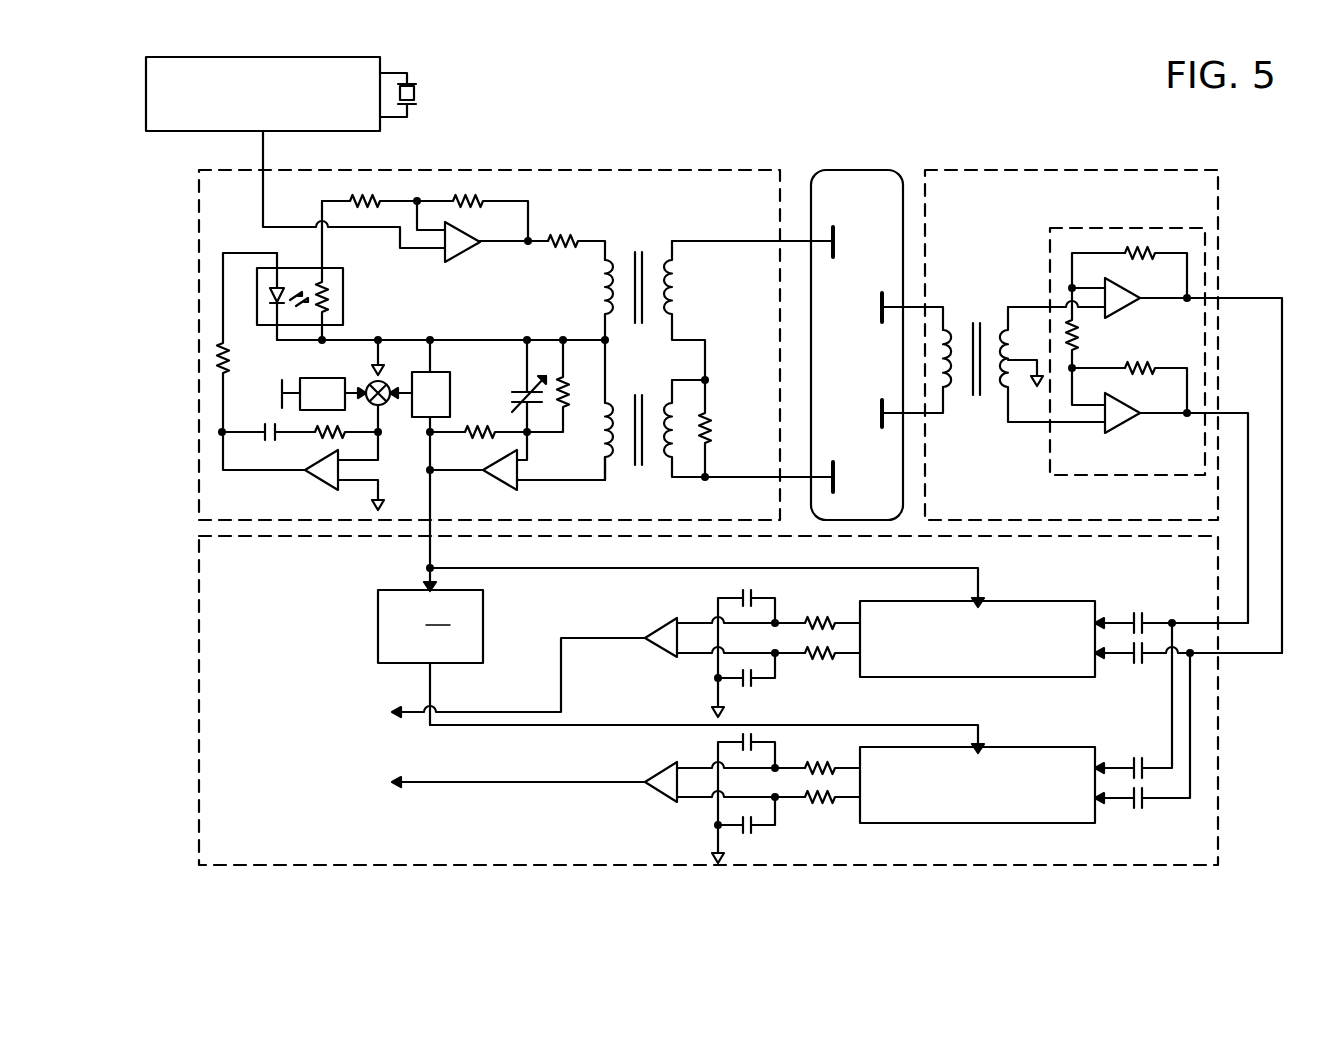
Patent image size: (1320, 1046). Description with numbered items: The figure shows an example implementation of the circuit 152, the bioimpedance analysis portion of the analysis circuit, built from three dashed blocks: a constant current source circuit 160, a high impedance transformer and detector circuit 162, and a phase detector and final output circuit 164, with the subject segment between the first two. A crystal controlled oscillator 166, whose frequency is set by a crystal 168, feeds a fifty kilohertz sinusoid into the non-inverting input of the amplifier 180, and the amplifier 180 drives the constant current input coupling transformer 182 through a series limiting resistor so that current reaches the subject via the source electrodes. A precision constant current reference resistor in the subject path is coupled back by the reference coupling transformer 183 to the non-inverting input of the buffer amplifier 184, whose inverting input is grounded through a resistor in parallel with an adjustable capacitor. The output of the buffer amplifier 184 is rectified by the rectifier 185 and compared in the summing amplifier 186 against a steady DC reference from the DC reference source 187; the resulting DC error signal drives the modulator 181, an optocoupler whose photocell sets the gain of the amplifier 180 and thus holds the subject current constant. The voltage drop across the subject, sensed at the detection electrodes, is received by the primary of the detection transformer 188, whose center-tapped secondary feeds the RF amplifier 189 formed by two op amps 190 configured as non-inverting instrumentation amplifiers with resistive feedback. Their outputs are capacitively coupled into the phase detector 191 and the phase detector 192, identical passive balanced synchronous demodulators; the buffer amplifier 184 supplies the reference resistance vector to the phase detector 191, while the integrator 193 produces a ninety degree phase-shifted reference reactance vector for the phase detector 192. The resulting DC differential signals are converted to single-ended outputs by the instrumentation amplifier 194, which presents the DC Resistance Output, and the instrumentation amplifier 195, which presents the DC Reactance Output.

The circuit 152 is at (661, 95).
The circuit 160 is at (196, 258).
The circuit 162 is at (1220, 196).
The circuit 164 is at (196, 564).
The crystal controlled oscillator 166 is at (200, 132).
The crystal 168 is at (425, 92).
The amplifier 180 is at (466, 260).
The modulator 181 is at (343, 268).
The constant current input coupling transformer 182 is at (606, 257).
The reference coupling transformer 183 is at (608, 462).
The buffer amplifier 184 is at (482, 489).
The rectifier 185 is at (440, 373).
The summing amplifier 186 is at (305, 489).
The DC reference source 187 is at (299, 379).
The detection transformer 188 is at (946, 330).
The RF amplifier 189 is at (1103, 226).
The op amps 190 is at (1125, 315).
The phase detector 191 is at (1055, 601).
The phase detector 192 is at (1055, 747).
The integrator 193 is at (378, 618).
The instrumentation amplifier 194 is at (655, 657).
The instrumentation amplifier 195 is at (655, 802).